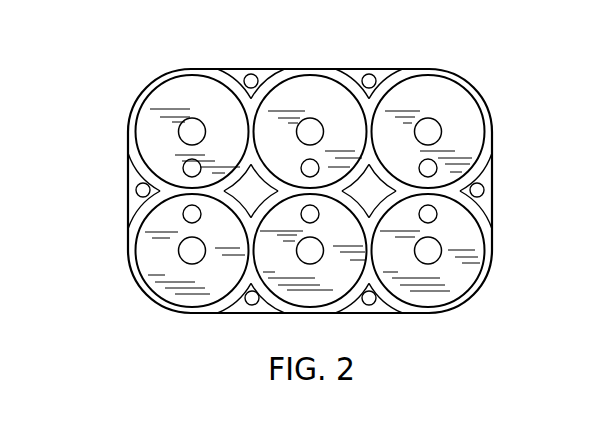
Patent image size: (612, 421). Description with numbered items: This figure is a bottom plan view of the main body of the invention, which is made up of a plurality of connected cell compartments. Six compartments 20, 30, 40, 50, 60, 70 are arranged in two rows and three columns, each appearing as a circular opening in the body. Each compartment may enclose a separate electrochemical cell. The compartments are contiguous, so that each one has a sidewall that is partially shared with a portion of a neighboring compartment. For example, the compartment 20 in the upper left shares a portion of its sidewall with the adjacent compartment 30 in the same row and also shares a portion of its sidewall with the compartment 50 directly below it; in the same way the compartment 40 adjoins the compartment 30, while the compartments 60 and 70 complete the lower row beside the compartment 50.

The compartment 20 is at (148, 133).
The compartment 30 is at (305, 100).
The compartment 40 is at (433, 82).
The compartment 50 is at (153, 260).
The compartment 60 is at (333, 272).
The compartment 70 is at (448, 270).